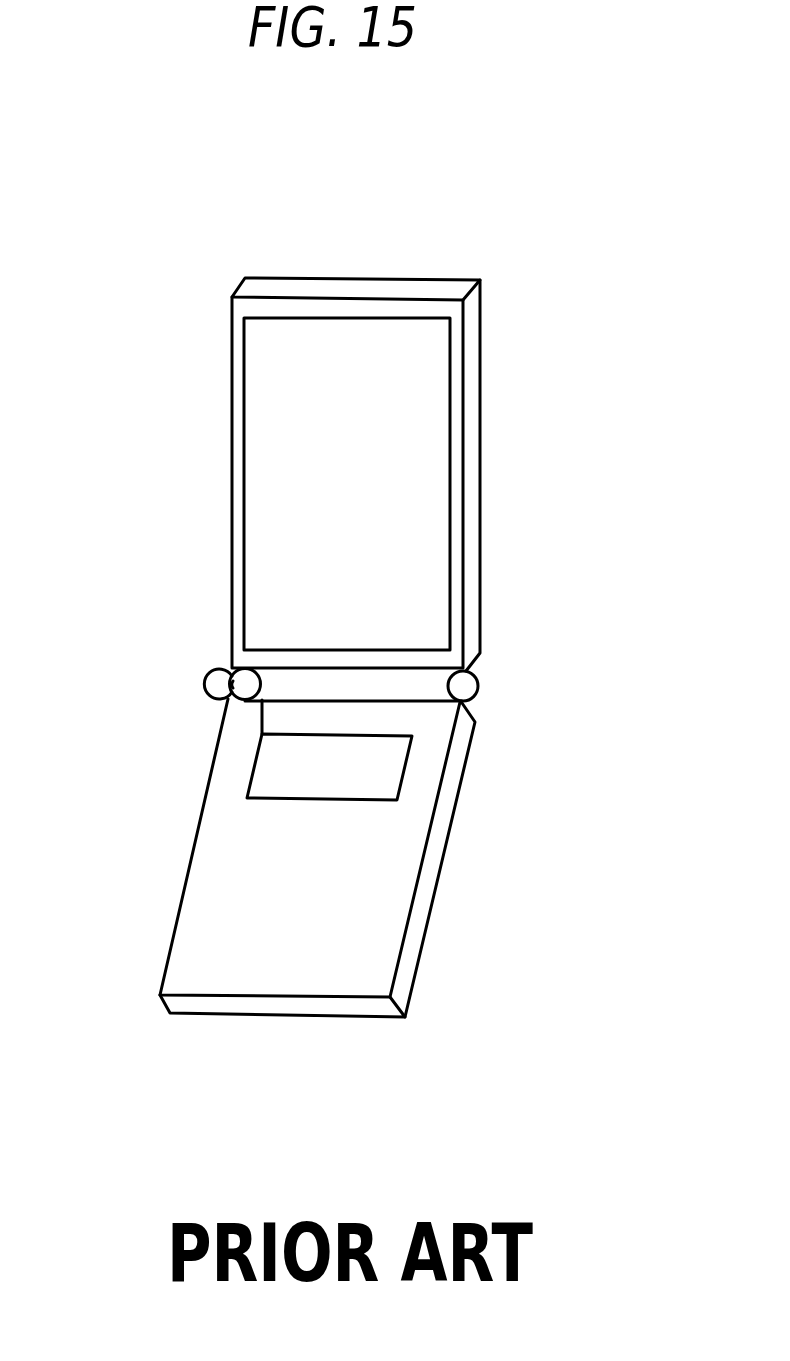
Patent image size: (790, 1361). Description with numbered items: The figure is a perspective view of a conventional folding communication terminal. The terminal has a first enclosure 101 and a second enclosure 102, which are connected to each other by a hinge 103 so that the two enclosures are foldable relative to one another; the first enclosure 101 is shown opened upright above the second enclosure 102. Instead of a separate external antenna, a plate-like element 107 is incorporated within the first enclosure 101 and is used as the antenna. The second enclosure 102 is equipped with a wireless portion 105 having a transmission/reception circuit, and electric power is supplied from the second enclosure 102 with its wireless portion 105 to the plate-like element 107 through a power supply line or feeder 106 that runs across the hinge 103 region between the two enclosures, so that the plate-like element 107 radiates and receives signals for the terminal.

The first enclosure 101 is at (476, 420).
The second enclosure 102 is at (395, 891).
The hinge 103 is at (477, 679).
The wireless portion 105 is at (403, 765).
The power supply line 106 is at (210, 683).
The plate-like element 107 is at (402, 548).